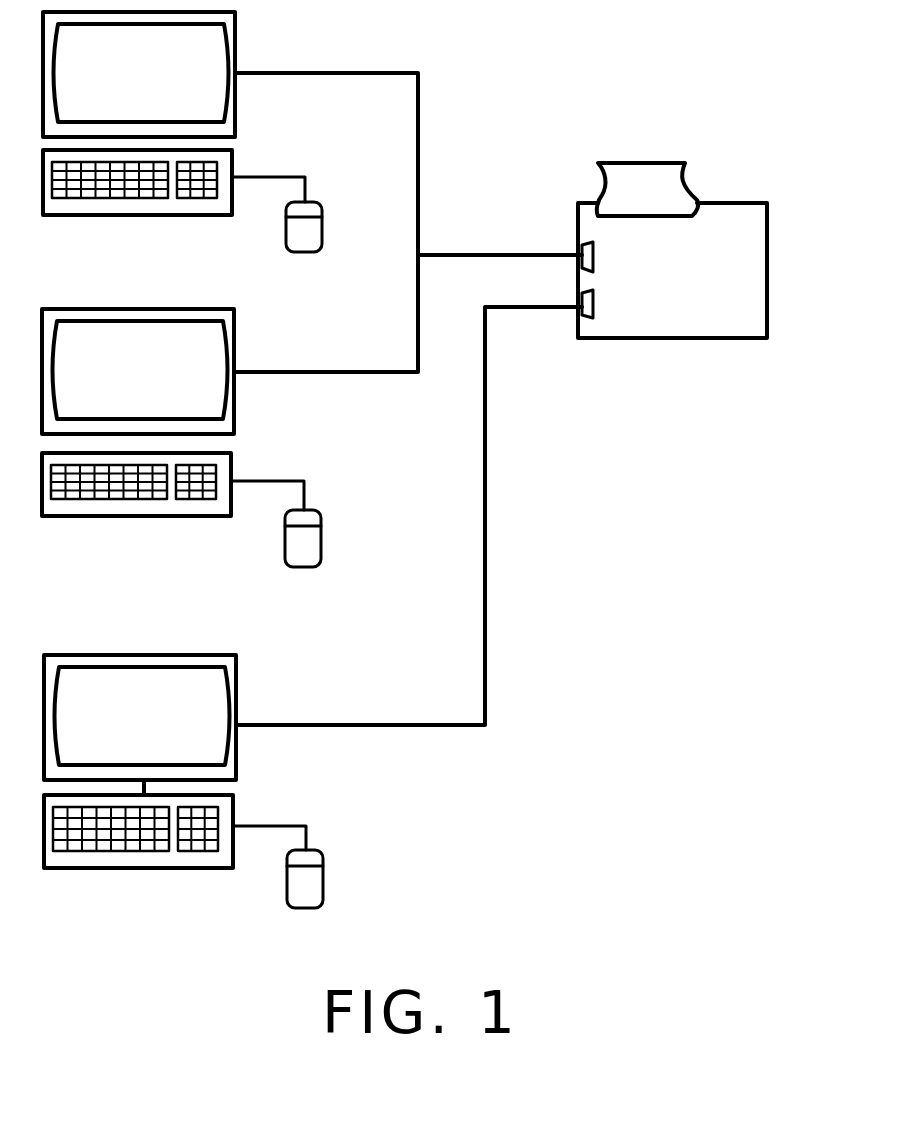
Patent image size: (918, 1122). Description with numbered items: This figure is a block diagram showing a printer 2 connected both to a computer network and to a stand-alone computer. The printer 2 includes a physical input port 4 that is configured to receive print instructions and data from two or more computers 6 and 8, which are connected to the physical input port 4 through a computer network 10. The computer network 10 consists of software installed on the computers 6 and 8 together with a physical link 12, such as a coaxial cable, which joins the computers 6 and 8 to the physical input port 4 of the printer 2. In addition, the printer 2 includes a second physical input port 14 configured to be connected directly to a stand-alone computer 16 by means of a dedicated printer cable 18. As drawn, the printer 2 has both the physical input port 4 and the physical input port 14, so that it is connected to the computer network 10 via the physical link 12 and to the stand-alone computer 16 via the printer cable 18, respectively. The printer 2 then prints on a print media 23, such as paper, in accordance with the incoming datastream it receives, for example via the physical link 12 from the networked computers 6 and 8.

The printer 2 is at (678, 340).
The physical input port 4 is at (594, 250).
The computer 6 is at (262, 98).
The computer 8 is at (257, 420).
The computer network 10 is at (456, 99).
The physical link 12 is at (420, 192).
The physical input port 14 is at (594, 312).
The stand-alone computer 16 is at (280, 763).
The dedicated printer cable 18 is at (487, 563).
The print media 23 is at (694, 190).